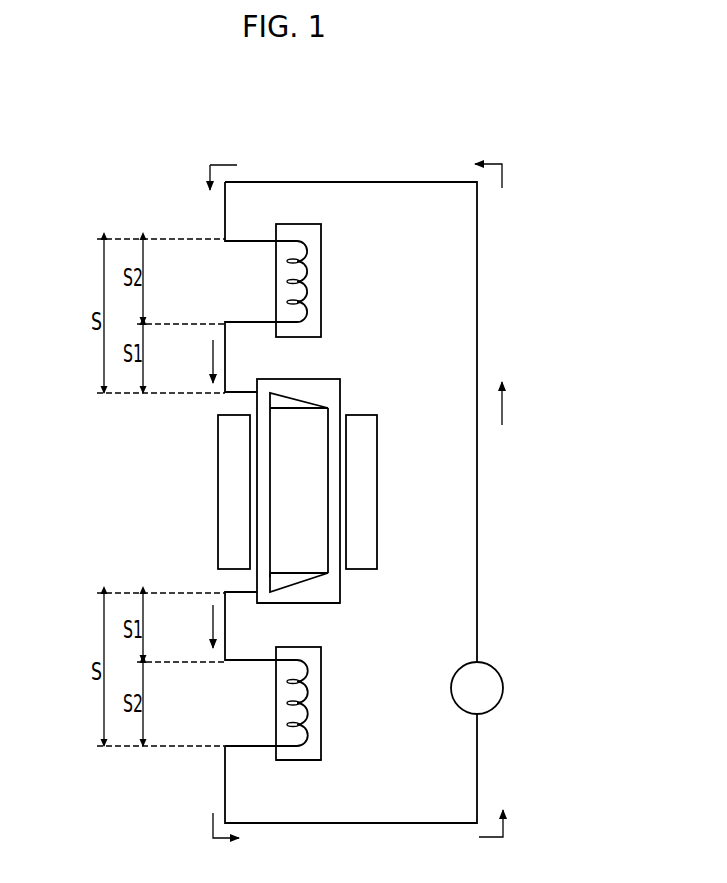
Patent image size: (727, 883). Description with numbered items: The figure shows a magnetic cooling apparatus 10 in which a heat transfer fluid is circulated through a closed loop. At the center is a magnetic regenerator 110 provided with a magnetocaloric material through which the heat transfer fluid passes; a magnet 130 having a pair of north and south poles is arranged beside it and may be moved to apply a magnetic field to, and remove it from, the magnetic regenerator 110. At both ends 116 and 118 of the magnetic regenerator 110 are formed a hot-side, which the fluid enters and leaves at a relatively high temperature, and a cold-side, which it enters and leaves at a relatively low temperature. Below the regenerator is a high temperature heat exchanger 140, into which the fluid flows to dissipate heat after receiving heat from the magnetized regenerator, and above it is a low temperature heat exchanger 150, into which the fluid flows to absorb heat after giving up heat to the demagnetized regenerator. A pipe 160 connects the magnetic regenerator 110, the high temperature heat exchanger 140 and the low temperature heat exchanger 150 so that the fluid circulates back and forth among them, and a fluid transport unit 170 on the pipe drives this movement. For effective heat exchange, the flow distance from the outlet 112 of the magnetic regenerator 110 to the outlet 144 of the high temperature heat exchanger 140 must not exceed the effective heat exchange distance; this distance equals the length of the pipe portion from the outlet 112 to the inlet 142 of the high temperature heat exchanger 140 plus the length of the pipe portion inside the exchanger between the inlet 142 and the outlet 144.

The magnetic cooling apparatus 10 is at (314, 137).
The magnetic regenerator 110 is at (287, 491).
The outlet of the magnetic regenerator 112 is at (255, 590).
The end of the magnetic regenerator 116 is at (320, 603).
The end of the magnetic regenerator 118 is at (318, 379).
The magnet 130 is at (218, 513).
The high temperature heat exchanger 140 is at (312, 712).
The inlet of the high temperature heat exchanger 142 is at (273, 660).
The outlet of the high temperature heat exchanger 144 is at (272, 747).
The low temperature heat exchanger 150 is at (315, 233).
The pipe 160 is at (477, 460).
The fluid transport unit 170 is at (490, 672).